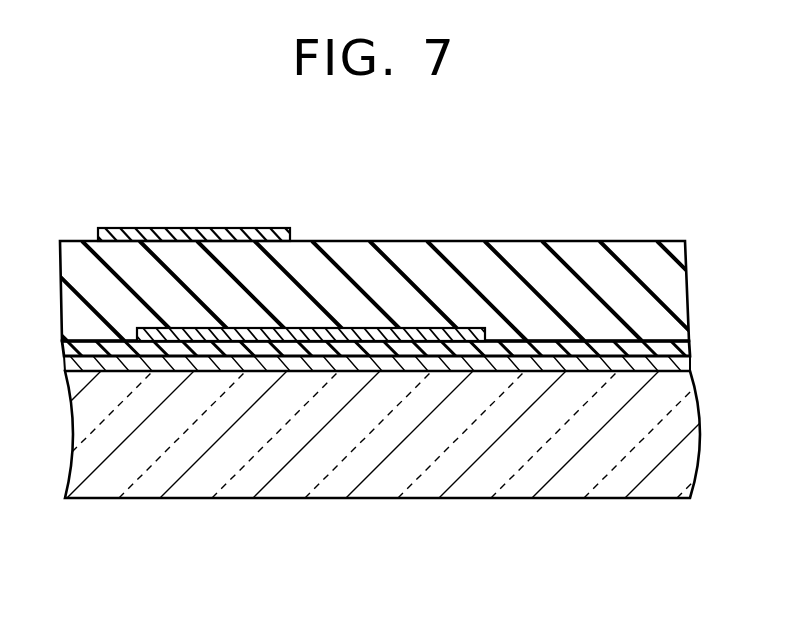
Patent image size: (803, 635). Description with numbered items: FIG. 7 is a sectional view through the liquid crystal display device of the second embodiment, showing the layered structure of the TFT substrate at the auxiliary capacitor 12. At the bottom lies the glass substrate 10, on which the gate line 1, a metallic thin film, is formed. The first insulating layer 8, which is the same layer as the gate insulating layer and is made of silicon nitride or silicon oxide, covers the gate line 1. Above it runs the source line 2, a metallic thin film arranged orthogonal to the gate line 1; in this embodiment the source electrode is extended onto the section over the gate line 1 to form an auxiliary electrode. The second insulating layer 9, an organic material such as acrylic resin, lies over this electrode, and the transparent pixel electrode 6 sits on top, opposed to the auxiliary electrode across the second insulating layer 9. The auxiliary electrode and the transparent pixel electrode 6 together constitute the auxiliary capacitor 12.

The gate line 1 is at (360, 360).
The source line 2 is at (414, 343).
The transparent pixel electrode 6 is at (133, 236).
The first insulating layer 8 is at (638, 353).
The second insulating layer 9 is at (527, 273).
The glass substrate 10 is at (513, 447).
The auxiliary capacitor 12 is at (203, 330).